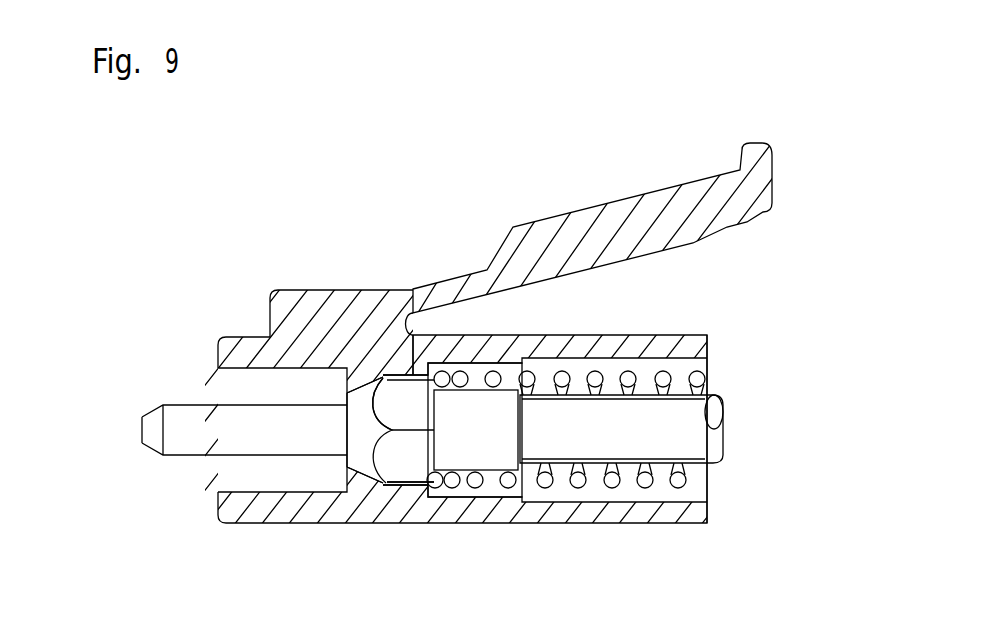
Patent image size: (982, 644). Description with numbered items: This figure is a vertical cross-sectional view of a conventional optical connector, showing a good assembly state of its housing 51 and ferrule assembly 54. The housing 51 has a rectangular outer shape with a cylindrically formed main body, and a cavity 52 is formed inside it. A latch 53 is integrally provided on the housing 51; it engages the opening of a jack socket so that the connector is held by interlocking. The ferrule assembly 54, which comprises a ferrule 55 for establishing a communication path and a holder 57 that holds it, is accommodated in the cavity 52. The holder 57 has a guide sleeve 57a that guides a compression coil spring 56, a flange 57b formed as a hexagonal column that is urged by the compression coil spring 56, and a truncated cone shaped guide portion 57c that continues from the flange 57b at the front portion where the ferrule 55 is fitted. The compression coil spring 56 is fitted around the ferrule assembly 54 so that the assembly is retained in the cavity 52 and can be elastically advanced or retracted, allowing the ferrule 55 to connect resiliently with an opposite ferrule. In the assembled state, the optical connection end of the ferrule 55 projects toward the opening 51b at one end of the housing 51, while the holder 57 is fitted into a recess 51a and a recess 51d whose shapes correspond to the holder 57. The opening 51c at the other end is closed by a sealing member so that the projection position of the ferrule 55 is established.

The housing 51 is at (645, 524).
The recess 51a is at (367, 394).
The opening 51b is at (227, 383).
The opening 51c is at (708, 362).
The recess 51d is at (416, 373).
The cavity 52 is at (610, 378).
The latch 53 is at (647, 213).
The ferrule assembly 54 is at (407, 490).
The ferrule 55 is at (193, 437).
The compression coil spring 56 is at (663, 378).
The holder 57 is at (387, 453).
The guide sleeve 57a is at (492, 443).
The flange 57b is at (405, 397).
The guide portion 57c is at (360, 443).